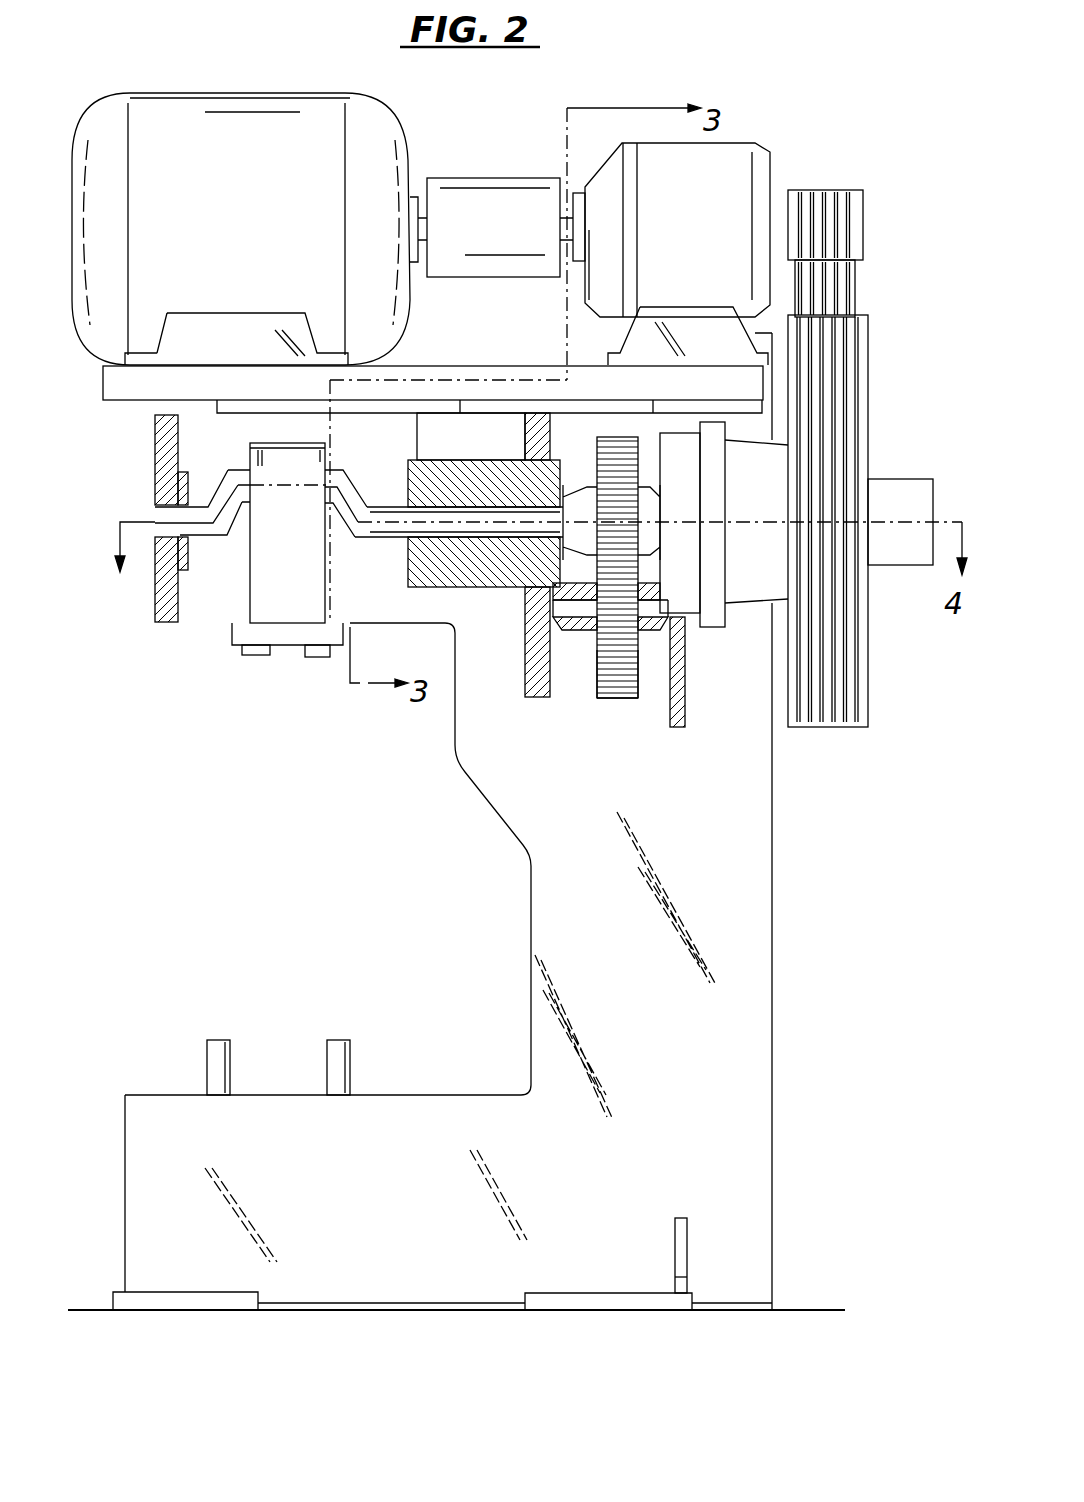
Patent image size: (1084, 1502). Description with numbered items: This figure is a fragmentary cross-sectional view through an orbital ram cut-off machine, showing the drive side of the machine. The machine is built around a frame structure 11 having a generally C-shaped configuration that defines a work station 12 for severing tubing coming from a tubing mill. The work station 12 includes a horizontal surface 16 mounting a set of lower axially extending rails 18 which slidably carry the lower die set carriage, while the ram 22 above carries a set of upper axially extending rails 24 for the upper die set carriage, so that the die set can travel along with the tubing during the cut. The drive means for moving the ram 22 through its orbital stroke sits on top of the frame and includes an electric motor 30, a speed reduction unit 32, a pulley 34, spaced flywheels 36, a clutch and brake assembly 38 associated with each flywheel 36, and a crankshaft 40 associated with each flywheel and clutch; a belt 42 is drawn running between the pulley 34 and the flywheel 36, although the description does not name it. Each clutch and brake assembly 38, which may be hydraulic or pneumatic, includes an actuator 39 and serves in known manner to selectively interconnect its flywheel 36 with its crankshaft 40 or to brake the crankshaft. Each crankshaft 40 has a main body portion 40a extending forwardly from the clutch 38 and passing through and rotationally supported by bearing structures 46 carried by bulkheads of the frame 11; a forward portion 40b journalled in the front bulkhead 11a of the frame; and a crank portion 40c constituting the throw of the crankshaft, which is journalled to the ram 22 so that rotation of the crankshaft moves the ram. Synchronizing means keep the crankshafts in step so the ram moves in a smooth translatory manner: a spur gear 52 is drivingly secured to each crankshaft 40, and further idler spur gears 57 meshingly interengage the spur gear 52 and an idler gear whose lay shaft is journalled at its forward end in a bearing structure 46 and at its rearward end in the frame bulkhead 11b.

The frame structure 11 is at (733, 1048).
The front bulkhead 11a is at (155, 440).
The frame bulkhead 11b is at (688, 713).
The work station 12 is at (215, 890).
The horizontal surface 16 is at (460, 1093).
The lower axially extending rails 18 is at (216, 1038).
The ram 22 is at (272, 580).
The upper axially extending rails 24 is at (322, 658).
The electric motor 30 is at (246, 235).
The speed reduction unit 32 is at (694, 235).
The pulley 34 is at (863, 206).
The flywheel 36 is at (868, 371).
The clutch and brake assembly 38 is at (750, 590).
The actuator 39 is at (915, 481).
The crankshaft 40 is at (500, 547).
The main body portion 40a is at (455, 530).
The forward portion 40b is at (155, 513).
The crank portion 40c is at (357, 480).
The belt 42 is at (855, 286).
The bearing structure 46 is at (516, 582).
The spur gear 52 is at (618, 438).
The further idler spur gear 57 is at (618, 695).